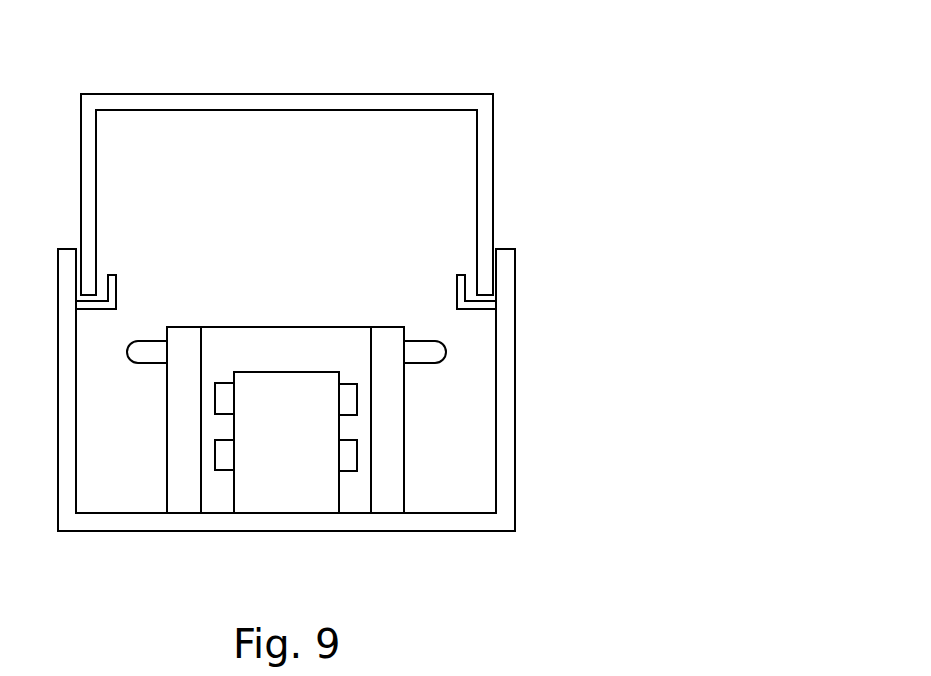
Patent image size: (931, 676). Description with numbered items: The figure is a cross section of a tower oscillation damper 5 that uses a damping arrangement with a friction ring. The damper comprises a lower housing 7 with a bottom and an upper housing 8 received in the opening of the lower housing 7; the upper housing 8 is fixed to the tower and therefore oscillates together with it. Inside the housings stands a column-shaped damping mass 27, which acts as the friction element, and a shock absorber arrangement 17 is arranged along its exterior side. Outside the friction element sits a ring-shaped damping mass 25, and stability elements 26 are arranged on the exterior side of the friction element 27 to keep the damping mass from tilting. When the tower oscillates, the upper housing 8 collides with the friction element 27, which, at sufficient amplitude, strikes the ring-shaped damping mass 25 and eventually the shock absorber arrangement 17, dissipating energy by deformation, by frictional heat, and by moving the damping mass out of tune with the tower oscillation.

The tower oscillation damper 5 is at (567, 58).
The lower housing 7 is at (518, 449).
The upper housing 8 is at (493, 165).
The shock absorber arrangement 17 is at (443, 343).
The ring-shaped damping mass 25 is at (186, 497).
The stability elements 26 is at (225, 472).
The column-shaped damping mass 27 is at (290, 492).